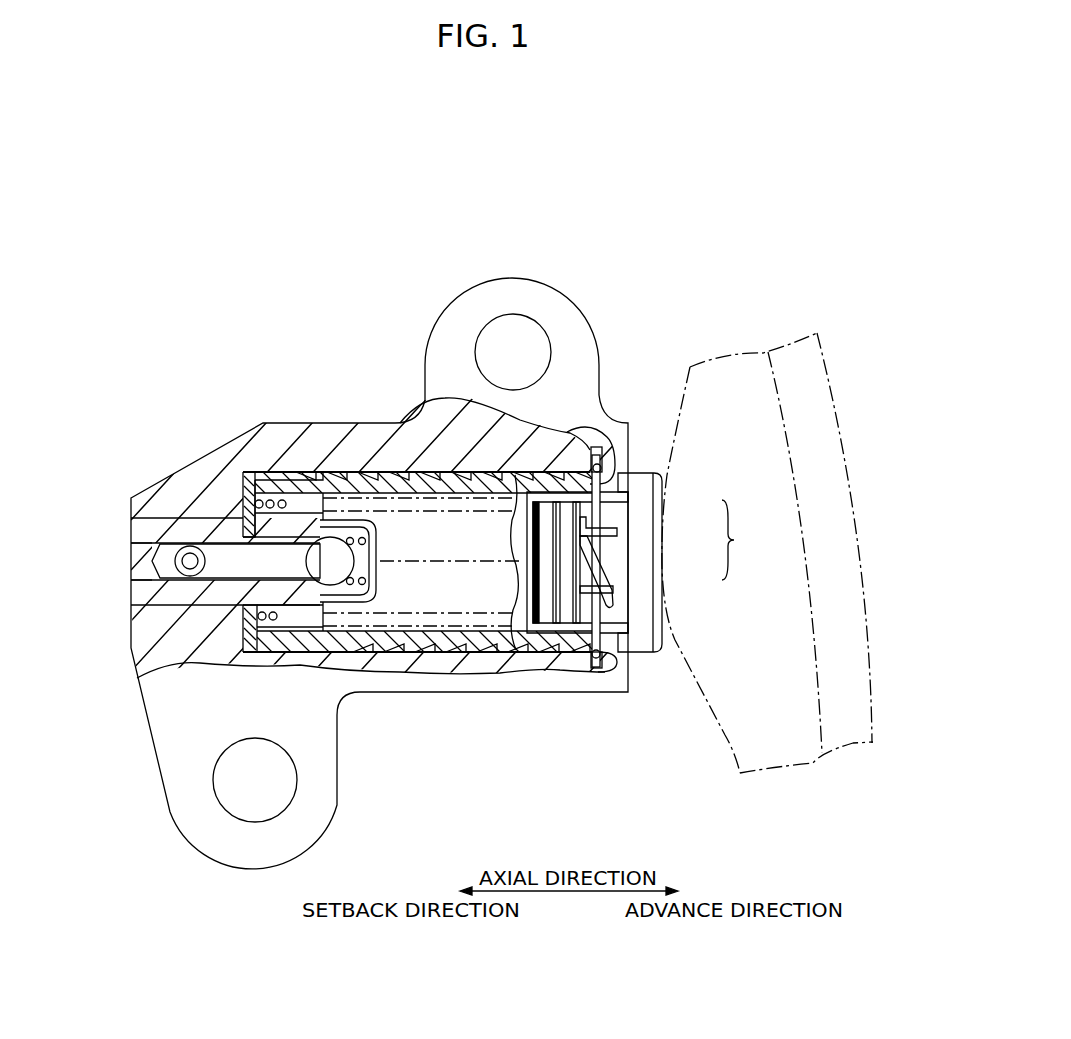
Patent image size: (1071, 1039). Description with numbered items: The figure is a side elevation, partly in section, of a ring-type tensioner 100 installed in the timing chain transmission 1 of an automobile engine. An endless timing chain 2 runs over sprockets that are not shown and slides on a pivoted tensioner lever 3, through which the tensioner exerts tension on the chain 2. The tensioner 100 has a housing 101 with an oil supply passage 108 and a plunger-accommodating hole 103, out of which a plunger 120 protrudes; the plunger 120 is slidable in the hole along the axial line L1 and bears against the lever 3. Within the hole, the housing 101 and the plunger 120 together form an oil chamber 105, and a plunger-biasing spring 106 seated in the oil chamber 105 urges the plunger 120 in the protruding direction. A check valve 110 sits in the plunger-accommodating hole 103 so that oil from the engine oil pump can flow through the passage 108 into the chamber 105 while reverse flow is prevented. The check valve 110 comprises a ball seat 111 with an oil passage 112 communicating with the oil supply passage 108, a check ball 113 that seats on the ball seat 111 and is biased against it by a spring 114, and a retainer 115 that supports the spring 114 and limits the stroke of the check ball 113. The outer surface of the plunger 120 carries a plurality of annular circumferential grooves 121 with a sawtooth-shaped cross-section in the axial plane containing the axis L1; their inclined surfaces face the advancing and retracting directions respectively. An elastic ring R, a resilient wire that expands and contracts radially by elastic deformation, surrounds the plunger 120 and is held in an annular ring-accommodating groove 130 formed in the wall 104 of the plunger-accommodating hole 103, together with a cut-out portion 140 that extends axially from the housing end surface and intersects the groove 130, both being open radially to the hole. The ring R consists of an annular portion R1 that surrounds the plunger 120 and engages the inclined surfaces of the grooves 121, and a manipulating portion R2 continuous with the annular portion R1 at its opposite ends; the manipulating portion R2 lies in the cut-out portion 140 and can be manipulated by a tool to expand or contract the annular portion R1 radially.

The timing chain transmission 1 is at (688, 150).
The timing chain 2 is at (827, 365).
The tensioner lever 3 is at (723, 728).
The ring-type tensioner 100 is at (360, 273).
The housing 101 is at (425, 698).
The plunger-accommodating hole 103 is at (250, 648).
The wall 104 is at (262, 476).
The oil chamber 105 is at (480, 597).
The plunger-biasing spring 106 is at (283, 499).
The oil supply passage 108 is at (191, 546).
The check valve 110 is at (378, 528).
The ball seat 111 is at (230, 537).
The oil passage 112 is at (227, 567).
The check ball 113 is at (320, 560).
The spring 114 is at (353, 520).
The retainer 115 is at (372, 574).
The plunger 120 is at (643, 487).
The annular circumferential grooves 121 is at (417, 480).
The ring-accommodating groove 130 is at (595, 456).
The cut-out portion 140 is at (619, 612).
The elastic ring R is at (735, 540).
The annular portion R1 is at (597, 514).
The manipulating portion R2 is at (612, 563).
The axial line L1 is at (478, 560).